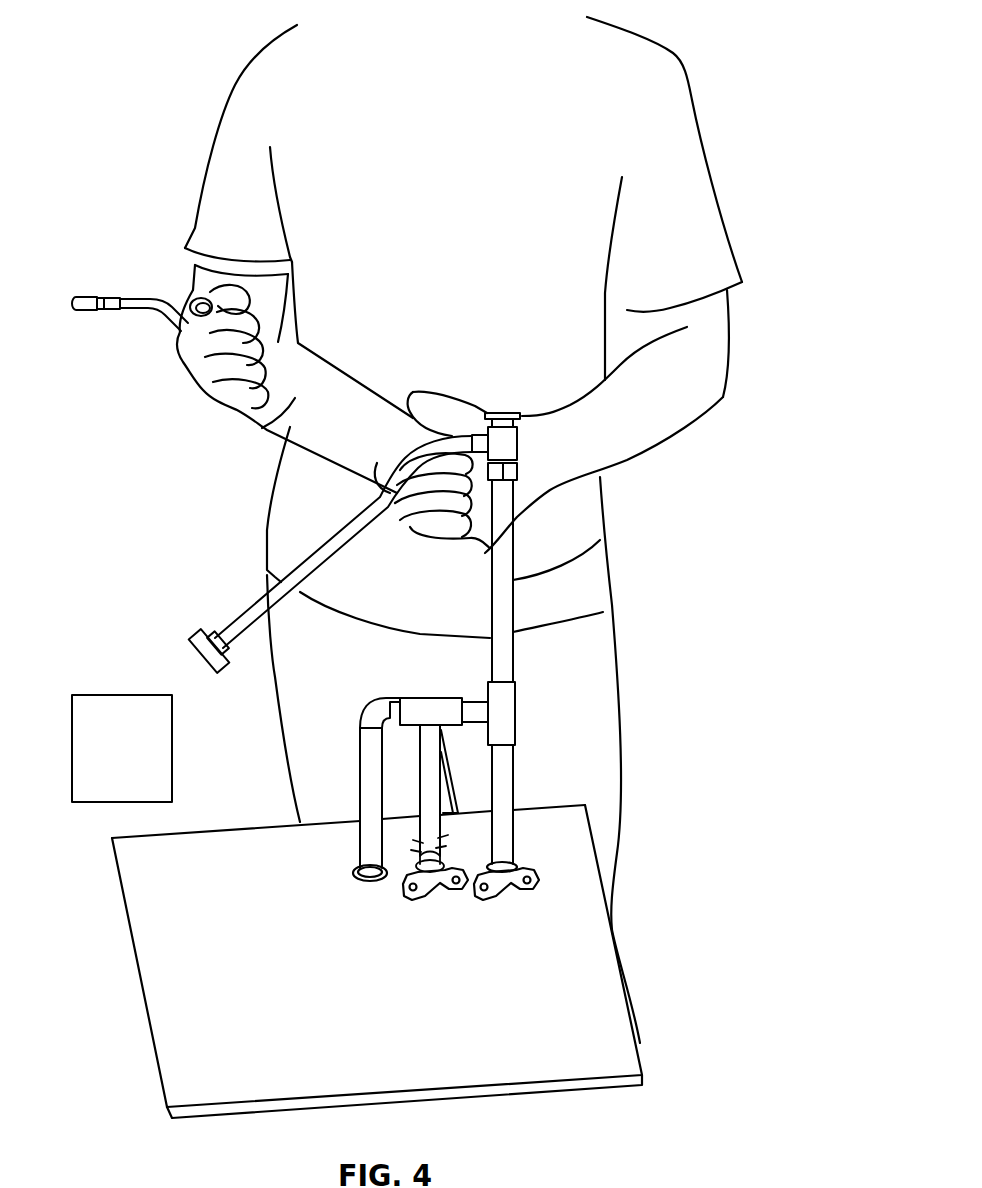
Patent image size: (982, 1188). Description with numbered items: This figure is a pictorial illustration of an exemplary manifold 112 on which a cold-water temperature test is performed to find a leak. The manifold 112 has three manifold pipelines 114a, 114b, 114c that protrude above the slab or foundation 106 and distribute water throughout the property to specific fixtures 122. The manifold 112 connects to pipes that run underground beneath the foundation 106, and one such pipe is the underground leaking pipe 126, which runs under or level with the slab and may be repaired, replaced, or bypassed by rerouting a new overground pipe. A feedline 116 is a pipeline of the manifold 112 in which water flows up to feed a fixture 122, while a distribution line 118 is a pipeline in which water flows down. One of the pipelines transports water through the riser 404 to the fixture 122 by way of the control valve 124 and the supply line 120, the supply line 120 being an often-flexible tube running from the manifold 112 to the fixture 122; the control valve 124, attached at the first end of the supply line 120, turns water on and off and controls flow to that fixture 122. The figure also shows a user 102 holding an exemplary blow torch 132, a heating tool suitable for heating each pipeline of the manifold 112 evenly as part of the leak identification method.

The user 102 is at (562, 110).
The control valve 124 is at (507, 410).
The blow torch 132 is at (262, 420).
The supply line 120 is at (245, 605).
The riser 404 is at (600, 540).
The manifold 112 is at (532, 657).
The feedline 116 is at (513, 767).
The manifold pipeline 114a is at (357, 755).
The manifold pipeline 114b is at (413, 737).
The manifold pipeline 114c is at (513, 793).
The underground leaking pipe 126 is at (408, 863).
The distribution line 118 is at (353, 838).
The foundation 106 is at (428, 1044).
The fixture 122 is at (190, 663).